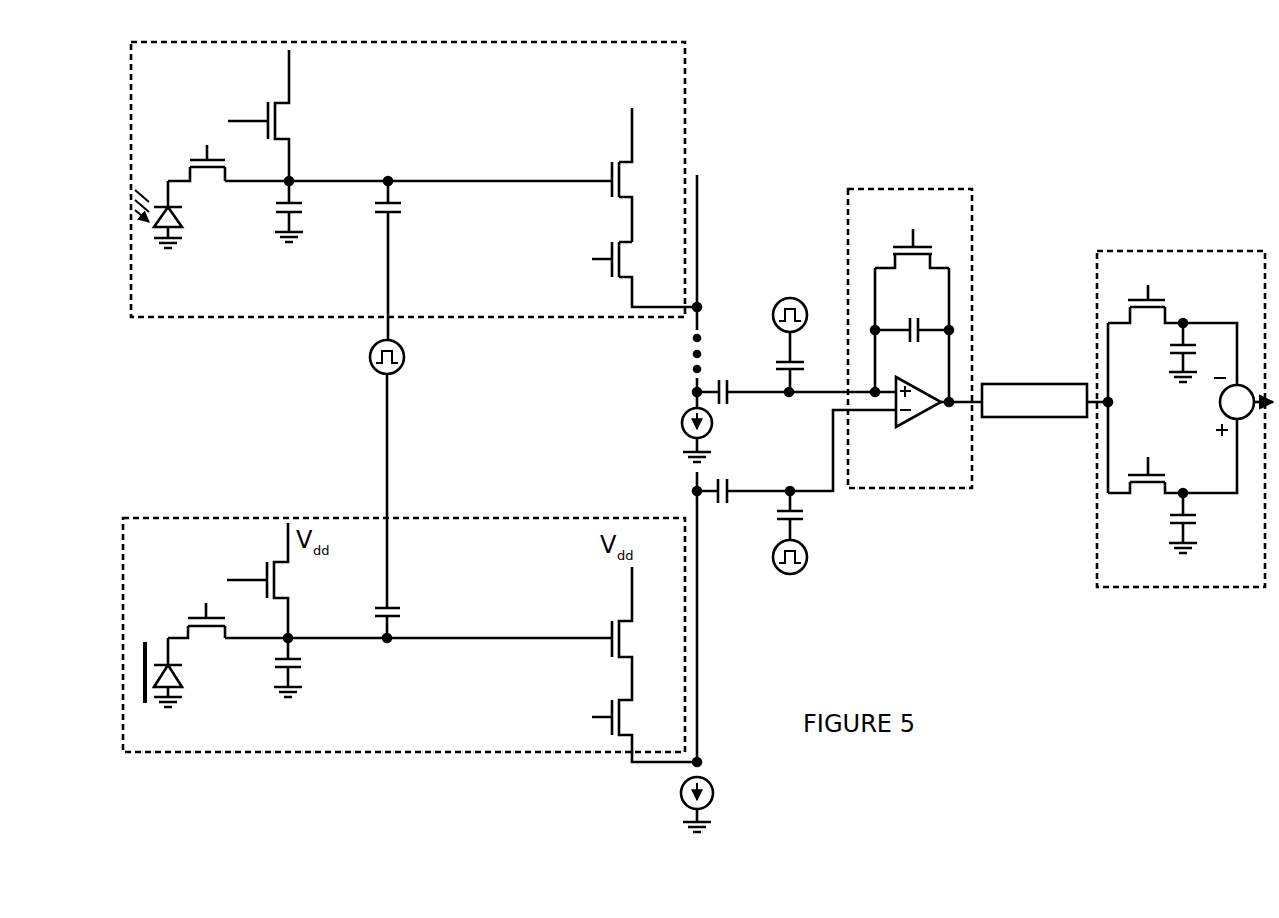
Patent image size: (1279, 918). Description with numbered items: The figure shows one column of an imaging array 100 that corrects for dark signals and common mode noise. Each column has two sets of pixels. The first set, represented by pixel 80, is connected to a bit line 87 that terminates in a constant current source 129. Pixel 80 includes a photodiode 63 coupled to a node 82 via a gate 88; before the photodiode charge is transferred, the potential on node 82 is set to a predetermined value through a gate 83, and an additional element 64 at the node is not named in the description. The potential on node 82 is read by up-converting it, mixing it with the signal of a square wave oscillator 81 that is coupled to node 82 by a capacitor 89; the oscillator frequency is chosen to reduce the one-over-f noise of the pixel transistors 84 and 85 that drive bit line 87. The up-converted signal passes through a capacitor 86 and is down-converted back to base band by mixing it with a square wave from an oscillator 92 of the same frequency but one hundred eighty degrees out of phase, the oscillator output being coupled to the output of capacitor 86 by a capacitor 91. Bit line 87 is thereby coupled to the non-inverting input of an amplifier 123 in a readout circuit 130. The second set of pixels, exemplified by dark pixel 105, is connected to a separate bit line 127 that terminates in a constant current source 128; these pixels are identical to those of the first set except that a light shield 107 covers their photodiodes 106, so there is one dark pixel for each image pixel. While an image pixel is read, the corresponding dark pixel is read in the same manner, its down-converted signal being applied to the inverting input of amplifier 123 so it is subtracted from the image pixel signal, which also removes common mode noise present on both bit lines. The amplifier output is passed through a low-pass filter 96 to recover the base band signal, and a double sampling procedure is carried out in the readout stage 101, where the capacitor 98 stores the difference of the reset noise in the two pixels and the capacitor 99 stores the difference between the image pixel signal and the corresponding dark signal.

The imaging array 100 is at (1027, 79).
The pixel 80 is at (152, 318).
The photodiode 63 is at (176, 214).
The gate 88 is at (200, 178).
The gate 83 is at (290, 141).
The storage capacitor 64 is at (302, 213).
The node 82 is at (389, 177).
The capacitor 89 is at (399, 211).
The square wave oscillator 81 is at (404, 352).
The transistor 85 is at (634, 195).
The transistor 84 is at (633, 280).
The bit line 87 is at (699, 213).
The oscillator 92 is at (773, 313).
The capacitor 91 is at (804, 366).
The capacitor 86 is at (727, 388).
The constant current source 129 is at (682, 423).
The readout circuit 130 is at (971, 292).
The amplifier 123 is at (915, 413).
The low-pass filter 96 is at (1040, 418).
The double sampling readout 101 is at (1170, 251).
The capacitor 98 is at (1172, 345).
The capacitor 99 is at (1172, 516).
The pixel 105 is at (205, 518).
The light shield 107 is at (150, 658).
The photodiode 106 is at (175, 668).
The bit line 127 is at (699, 691).
The constant current source 128 is at (681, 793).